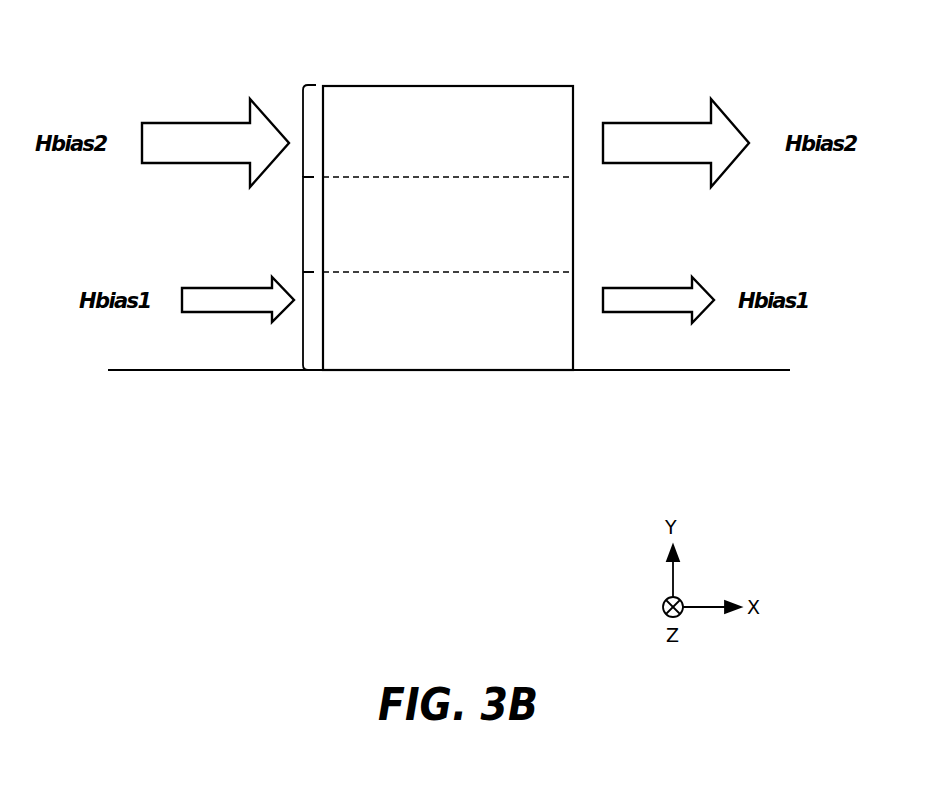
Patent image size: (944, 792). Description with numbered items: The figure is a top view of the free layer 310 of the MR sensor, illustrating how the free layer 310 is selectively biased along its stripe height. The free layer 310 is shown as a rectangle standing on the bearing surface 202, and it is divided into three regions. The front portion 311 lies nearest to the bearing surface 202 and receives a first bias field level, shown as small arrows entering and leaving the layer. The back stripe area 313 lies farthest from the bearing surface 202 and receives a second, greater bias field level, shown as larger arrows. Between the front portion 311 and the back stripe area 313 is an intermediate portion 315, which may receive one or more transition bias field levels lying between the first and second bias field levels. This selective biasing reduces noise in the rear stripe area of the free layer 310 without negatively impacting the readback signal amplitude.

The bearing surface 202 is at (732, 371).
The free layer 310 is at (443, 118).
The front portion 311 is at (302, 322).
The back stripe area 313 is at (302, 131).
The portion between front portion and rear portion 315 is at (303, 225).